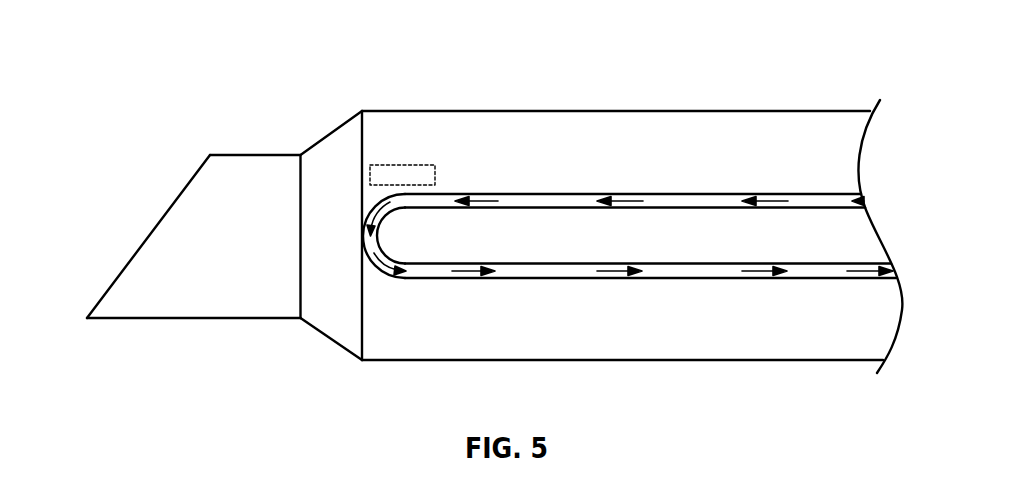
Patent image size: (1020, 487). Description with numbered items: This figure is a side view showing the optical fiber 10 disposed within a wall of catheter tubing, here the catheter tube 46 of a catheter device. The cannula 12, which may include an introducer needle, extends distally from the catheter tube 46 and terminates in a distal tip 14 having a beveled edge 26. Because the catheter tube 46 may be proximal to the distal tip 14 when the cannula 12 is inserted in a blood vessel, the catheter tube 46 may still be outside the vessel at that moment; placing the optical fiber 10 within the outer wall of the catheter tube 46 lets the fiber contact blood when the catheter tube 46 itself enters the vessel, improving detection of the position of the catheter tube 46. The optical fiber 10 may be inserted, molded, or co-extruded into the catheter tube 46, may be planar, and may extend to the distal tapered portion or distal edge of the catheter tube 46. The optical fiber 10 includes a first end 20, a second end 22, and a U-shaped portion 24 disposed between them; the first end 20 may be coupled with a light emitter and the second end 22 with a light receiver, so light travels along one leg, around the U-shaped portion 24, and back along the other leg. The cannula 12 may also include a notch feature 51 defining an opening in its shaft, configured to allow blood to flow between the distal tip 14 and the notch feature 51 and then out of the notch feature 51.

The optical fiber 10 is at (582, 234).
The cannula 12 is at (173, 268).
The distal tip 14 is at (88, 317).
The first end 20 is at (730, 205).
The second end 22 is at (720, 272).
The U-shaped portion 24 is at (365, 218).
The beveled edge 26 is at (163, 213).
The catheter tube 46 is at (483, 127).
The notch feature 51 is at (392, 165).